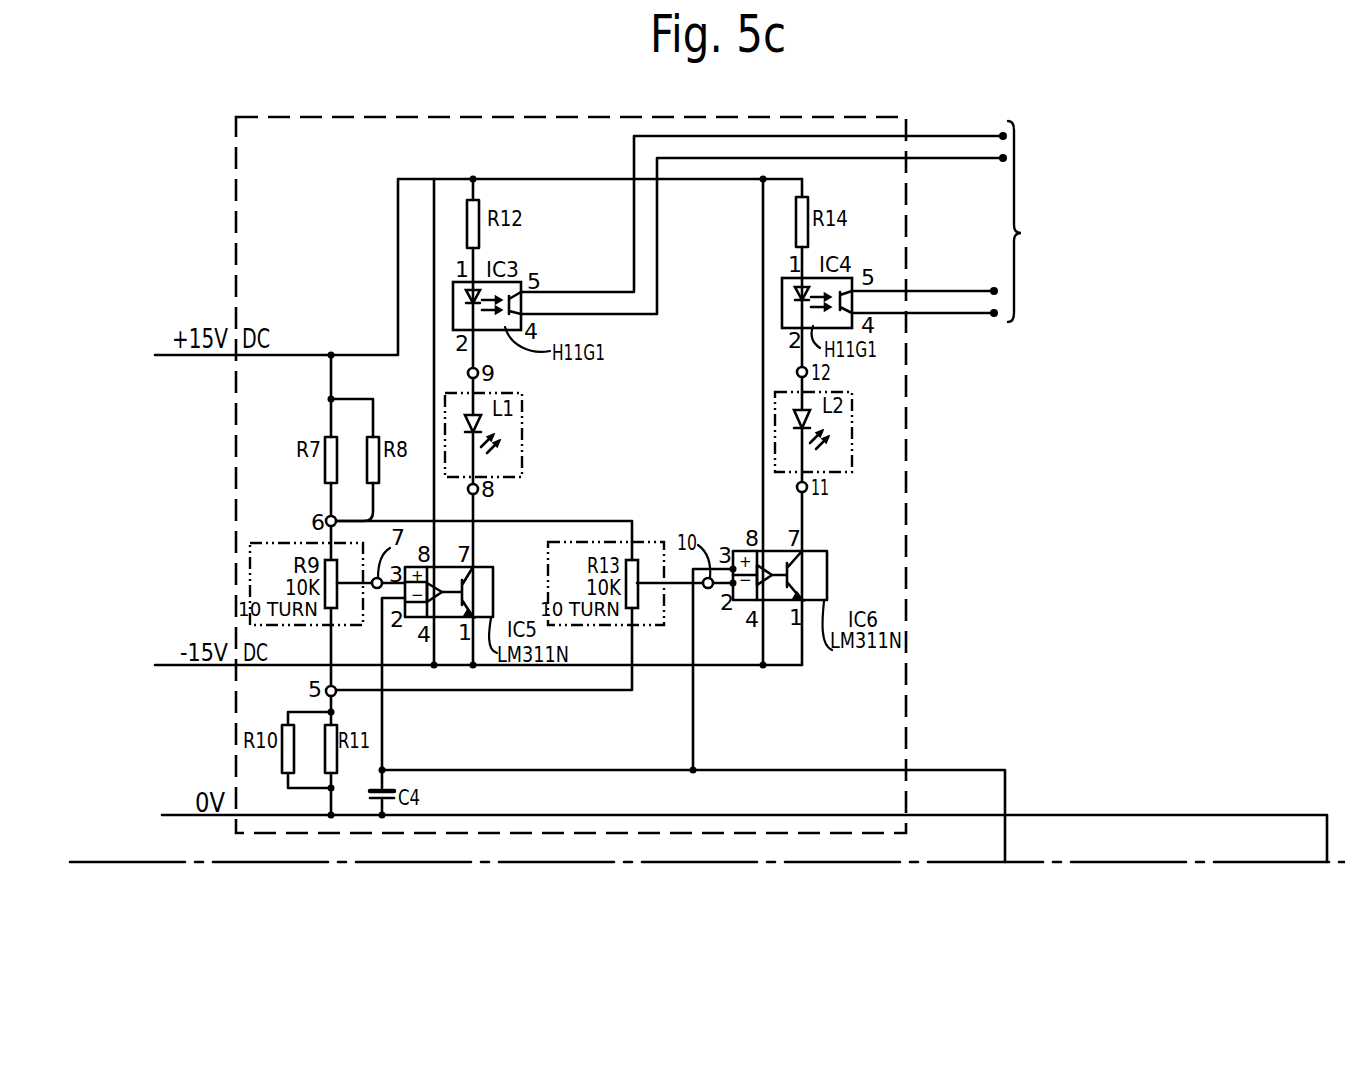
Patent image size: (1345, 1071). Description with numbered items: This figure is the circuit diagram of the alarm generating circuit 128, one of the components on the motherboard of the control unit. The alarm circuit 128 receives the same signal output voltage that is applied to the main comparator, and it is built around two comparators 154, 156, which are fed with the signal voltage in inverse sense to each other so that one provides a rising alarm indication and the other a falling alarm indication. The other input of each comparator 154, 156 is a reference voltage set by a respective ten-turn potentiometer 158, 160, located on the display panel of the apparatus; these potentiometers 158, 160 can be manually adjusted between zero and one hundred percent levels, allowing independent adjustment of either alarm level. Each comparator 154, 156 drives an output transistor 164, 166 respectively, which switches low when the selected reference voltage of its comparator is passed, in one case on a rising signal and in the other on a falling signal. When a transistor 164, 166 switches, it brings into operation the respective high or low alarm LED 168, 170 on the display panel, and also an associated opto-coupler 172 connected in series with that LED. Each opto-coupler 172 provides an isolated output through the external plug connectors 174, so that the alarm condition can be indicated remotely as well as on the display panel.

The alarm generating circuit 128 is at (907, 700).
The comparator 154 is at (441, 600).
The comparator 156 is at (748, 599).
The 10-turn potentiometer 158 is at (255, 570).
The 10-turn potentiometer 160 is at (650, 543).
The output transistor 164 is at (462, 590).
The output transistor 166 is at (800, 566).
The high alarm LED 168 is at (518, 427).
The low alarm LED 170 is at (775, 414).
The opto-coupler 172 is at (517, 282).
The external plug connector 174 is at (1031, 221).